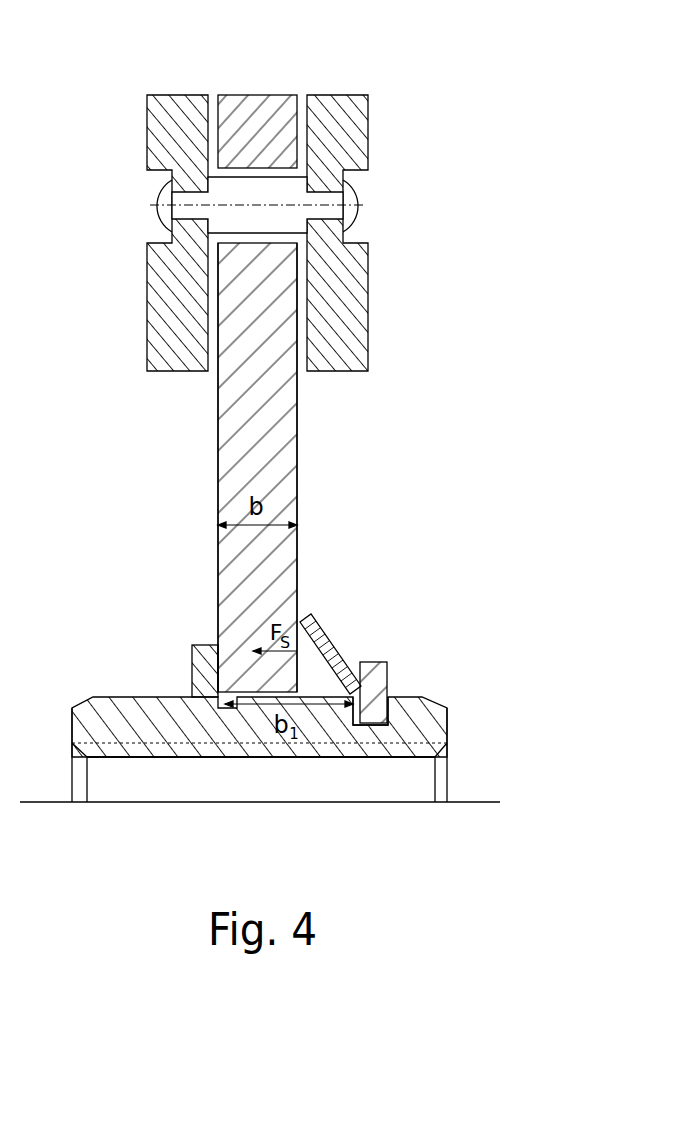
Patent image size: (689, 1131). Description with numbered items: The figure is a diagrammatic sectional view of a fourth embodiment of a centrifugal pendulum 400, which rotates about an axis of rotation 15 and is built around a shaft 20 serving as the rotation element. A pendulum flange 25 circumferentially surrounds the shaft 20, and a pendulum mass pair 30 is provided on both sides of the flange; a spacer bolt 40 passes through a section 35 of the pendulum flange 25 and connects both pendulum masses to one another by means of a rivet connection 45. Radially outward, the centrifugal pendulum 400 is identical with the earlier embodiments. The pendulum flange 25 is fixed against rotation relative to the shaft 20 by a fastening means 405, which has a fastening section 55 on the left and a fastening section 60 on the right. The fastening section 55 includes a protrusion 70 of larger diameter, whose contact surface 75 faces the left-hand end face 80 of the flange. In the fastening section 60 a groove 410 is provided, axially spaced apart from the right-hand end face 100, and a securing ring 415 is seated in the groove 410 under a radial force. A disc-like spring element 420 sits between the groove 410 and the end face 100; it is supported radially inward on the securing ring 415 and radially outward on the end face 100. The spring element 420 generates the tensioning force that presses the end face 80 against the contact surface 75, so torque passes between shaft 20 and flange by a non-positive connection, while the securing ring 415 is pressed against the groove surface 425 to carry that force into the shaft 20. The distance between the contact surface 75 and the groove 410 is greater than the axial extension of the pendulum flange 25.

The axis of rotation 15 is at (493, 801).
The shaft 20 is at (447, 750).
The pendulum flange 25 is at (288, 468).
The pendulum mass pair 30 is at (157, 336).
The section of pendulum flange 35 is at (226, 150).
The spacer bolt 40 is at (259, 193).
The rivet connection 45 is at (170, 215).
The fastening section 55 is at (188, 751).
The fastening section 60 is at (259, 765).
The protrusion 70 is at (200, 666).
The contact surface 75 is at (232, 641).
The end face 80 is at (217, 473).
The end face 100 is at (298, 389).
The centrifugal pendulum 400 is at (493, 557).
The fastening means 405 is at (364, 603).
The groove 410 is at (440, 712).
The securing ring 415 is at (388, 665).
The spring element 420 is at (322, 618).
The groove surface 425 is at (388, 697).